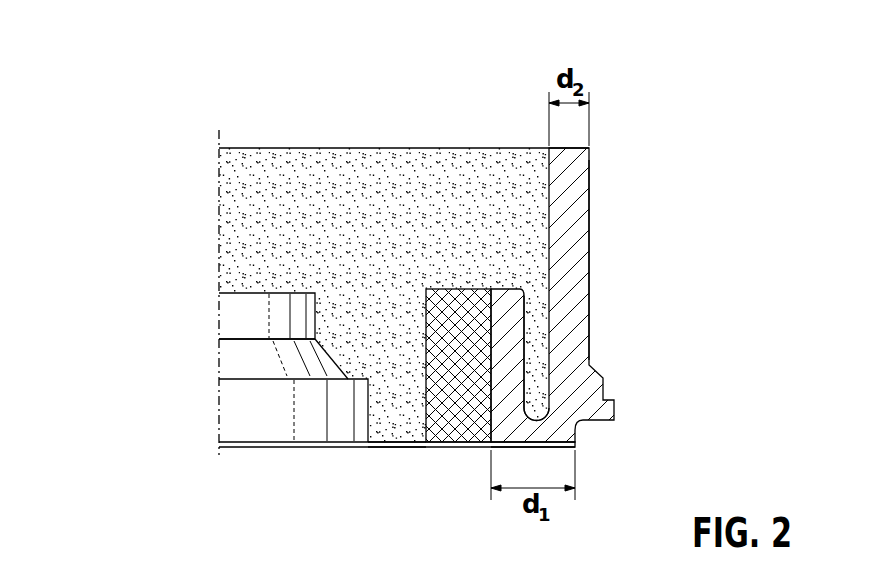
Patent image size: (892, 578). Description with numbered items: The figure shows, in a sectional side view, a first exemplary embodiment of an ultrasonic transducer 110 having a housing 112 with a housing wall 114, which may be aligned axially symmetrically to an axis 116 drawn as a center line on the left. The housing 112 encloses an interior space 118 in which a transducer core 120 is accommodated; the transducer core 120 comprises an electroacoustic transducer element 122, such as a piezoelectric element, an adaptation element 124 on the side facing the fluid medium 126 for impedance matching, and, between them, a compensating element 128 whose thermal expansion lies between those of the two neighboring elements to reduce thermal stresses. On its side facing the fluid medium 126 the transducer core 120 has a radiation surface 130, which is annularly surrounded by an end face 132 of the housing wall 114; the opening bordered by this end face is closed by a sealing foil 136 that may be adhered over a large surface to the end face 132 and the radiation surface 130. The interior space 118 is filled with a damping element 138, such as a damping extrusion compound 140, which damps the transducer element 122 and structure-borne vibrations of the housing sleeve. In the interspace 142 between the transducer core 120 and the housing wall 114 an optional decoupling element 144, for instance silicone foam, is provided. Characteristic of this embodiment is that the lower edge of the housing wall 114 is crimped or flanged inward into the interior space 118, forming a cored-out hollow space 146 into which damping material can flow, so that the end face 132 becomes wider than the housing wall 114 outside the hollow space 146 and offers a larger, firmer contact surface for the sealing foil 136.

The ultrasonic transducer 110 is at (249, 128).
The housing 112 is at (589, 220).
The housing wall 114 is at (573, 263).
The axis 116 is at (219, 214).
The interior space 118 is at (277, 194).
The transducer core 120 is at (120, 303).
The electroacoustic transducer element 122 is at (235, 316).
The adaptation element 124 is at (235, 413).
The fluid medium 126 is at (322, 522).
The compensating element 128 is at (235, 362).
The radiation surface 130 is at (287, 444).
The end face 132 is at (543, 450).
The sealing foil 136 is at (413, 450).
The damping element 138 is at (570, 180).
The damping extrusion compound 140 is at (507, 183).
The interspace 142 is at (395, 402).
The decoupling element 144 is at (470, 316).
The hollow space 146 is at (537, 347).